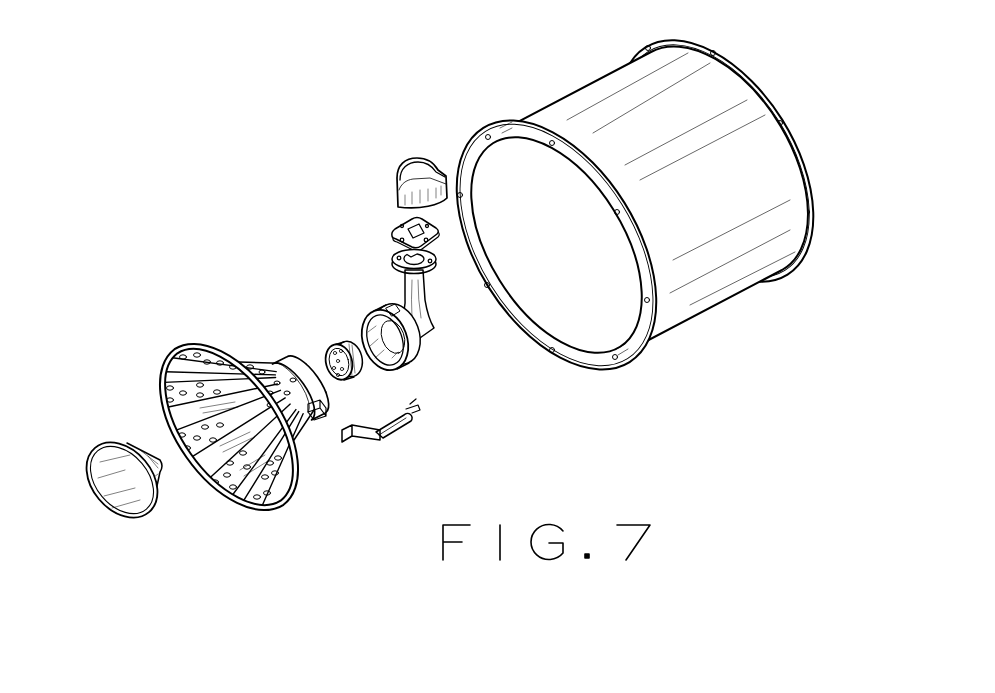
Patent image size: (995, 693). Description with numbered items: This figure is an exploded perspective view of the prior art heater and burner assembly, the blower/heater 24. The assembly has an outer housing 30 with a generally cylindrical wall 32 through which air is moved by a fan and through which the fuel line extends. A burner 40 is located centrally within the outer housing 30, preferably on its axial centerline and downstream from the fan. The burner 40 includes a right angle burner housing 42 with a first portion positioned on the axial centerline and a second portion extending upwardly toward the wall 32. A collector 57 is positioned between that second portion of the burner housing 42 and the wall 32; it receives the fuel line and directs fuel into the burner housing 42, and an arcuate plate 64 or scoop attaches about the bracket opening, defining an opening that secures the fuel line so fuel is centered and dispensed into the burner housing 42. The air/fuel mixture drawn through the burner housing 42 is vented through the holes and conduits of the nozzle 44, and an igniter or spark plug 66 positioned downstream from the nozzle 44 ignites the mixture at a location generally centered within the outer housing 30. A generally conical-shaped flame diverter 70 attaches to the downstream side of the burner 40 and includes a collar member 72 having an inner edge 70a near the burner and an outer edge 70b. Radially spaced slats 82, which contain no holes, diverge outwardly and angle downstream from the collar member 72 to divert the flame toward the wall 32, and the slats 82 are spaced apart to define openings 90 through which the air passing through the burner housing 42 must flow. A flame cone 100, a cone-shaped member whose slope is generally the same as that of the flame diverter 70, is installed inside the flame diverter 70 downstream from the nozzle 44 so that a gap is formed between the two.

The blower/heater 24 is at (451, 128).
The outer housing 30 is at (635, 205).
The cylindrical wall 32 is at (709, 266).
The burner 40 is at (436, 384).
The burner housing 42 is at (426, 333).
The nozzle 44 is at (330, 326).
The collector 57 is at (387, 195).
The arcuate plate 64 is at (387, 240).
The igniter or spark plug 66 is at (428, 420).
The flame diverter 70 is at (220, 435).
The inner edge 70a is at (302, 420).
The outer edge 70b is at (244, 503).
The collar member 72 is at (207, 430).
The slats 82 is at (190, 434).
The openings 90 is at (209, 452).
The flame cone 100 is at (108, 516).